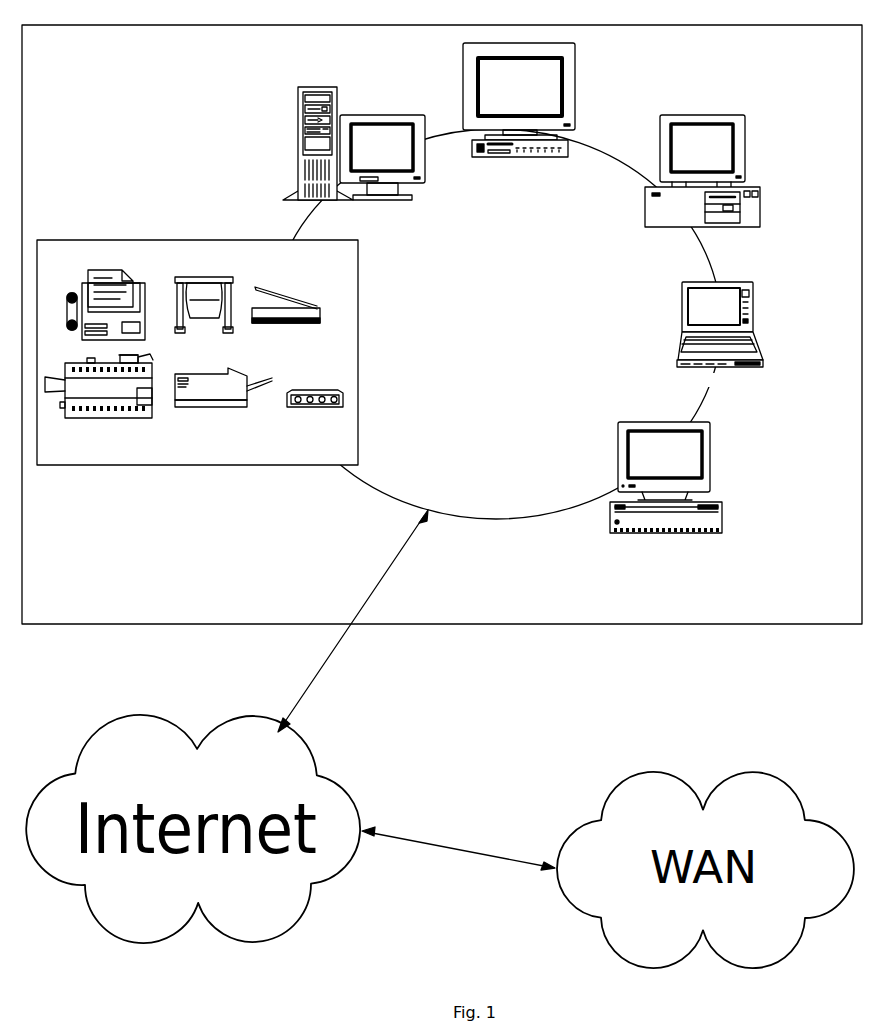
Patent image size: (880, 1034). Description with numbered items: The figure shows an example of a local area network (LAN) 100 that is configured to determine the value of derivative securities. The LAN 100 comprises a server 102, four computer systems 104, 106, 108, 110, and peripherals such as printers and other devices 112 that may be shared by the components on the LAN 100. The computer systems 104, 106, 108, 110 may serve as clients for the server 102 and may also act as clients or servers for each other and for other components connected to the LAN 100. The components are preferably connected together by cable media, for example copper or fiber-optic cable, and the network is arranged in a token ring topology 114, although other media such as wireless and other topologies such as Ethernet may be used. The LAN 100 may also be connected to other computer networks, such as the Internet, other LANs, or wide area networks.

The local area network (LAN) 100 is at (476, 622).
The server 102 is at (312, 210).
The computer system 104 is at (519, 109).
The computer system 106 is at (687, 233).
The computer system 108 is at (713, 367).
The computer system 110 is at (666, 487).
The peripherals 112 is at (210, 460).
The token ring topology 114 is at (542, 332).